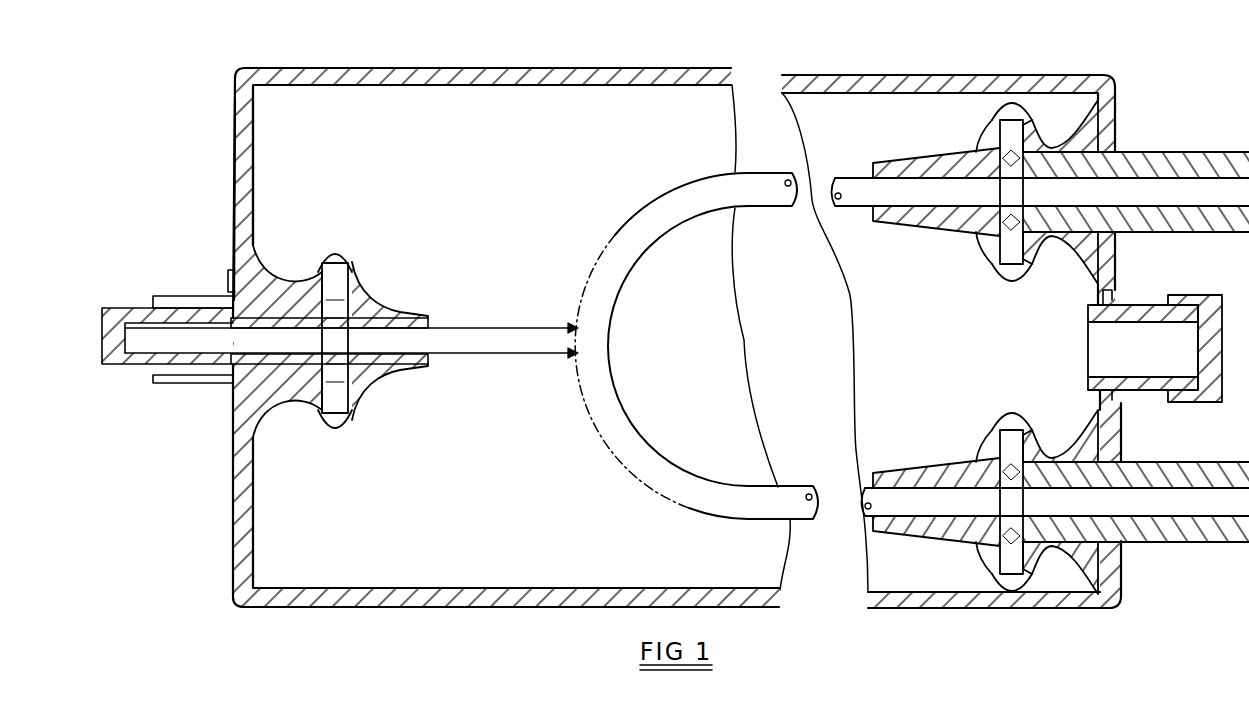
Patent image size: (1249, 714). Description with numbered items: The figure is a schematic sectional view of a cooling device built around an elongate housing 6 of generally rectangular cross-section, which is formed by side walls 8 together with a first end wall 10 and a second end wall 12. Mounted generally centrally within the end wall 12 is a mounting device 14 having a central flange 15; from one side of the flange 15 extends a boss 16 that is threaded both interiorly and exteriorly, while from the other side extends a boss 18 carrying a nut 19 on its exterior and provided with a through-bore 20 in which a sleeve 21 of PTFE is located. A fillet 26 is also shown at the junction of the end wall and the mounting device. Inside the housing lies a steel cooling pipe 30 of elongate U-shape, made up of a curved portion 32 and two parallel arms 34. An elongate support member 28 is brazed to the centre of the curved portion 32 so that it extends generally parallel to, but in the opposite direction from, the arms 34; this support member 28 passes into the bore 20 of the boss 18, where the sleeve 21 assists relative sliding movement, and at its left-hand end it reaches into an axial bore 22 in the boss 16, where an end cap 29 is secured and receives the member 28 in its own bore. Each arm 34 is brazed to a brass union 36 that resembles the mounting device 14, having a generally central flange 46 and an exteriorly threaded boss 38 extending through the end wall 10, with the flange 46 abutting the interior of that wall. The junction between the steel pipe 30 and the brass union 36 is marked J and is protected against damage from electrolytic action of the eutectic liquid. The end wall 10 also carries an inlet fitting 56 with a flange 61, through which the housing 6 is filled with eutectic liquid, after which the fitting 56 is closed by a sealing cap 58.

The housing 6 is at (500, 589).
The side walls 8 is at (385, 78).
The first end wall 10 is at (1112, 100).
The second end wall 12 is at (255, 165).
The mounting device 14 is at (368, 246).
The central flange 15 is at (236, 292).
The boss 16 is at (165, 302).
The boss 18 is at (362, 300).
The nut 19 is at (345, 416).
The through-bore 20 is at (398, 312).
The sleeve 21 is at (280, 402).
The axial bore 22 is at (200, 388).
The upper fillet 26 is at (270, 278).
The support member 28 is at (490, 350).
The end cap 29 is at (125, 378).
The cooling pipe 30 is at (684, 513).
The curved portion 32 is at (604, 390).
The parallel arms 34 is at (850, 192).
The brass union 36 is at (1011, 134).
The threaded boss 38 is at (1175, 165).
The flange 46 is at (1093, 146).
The inlet fitting 56 is at (1148, 382).
The sealing cap 58 is at (1212, 320).
The flange 61 is at (1114, 295).
The junction J is at (993, 232).